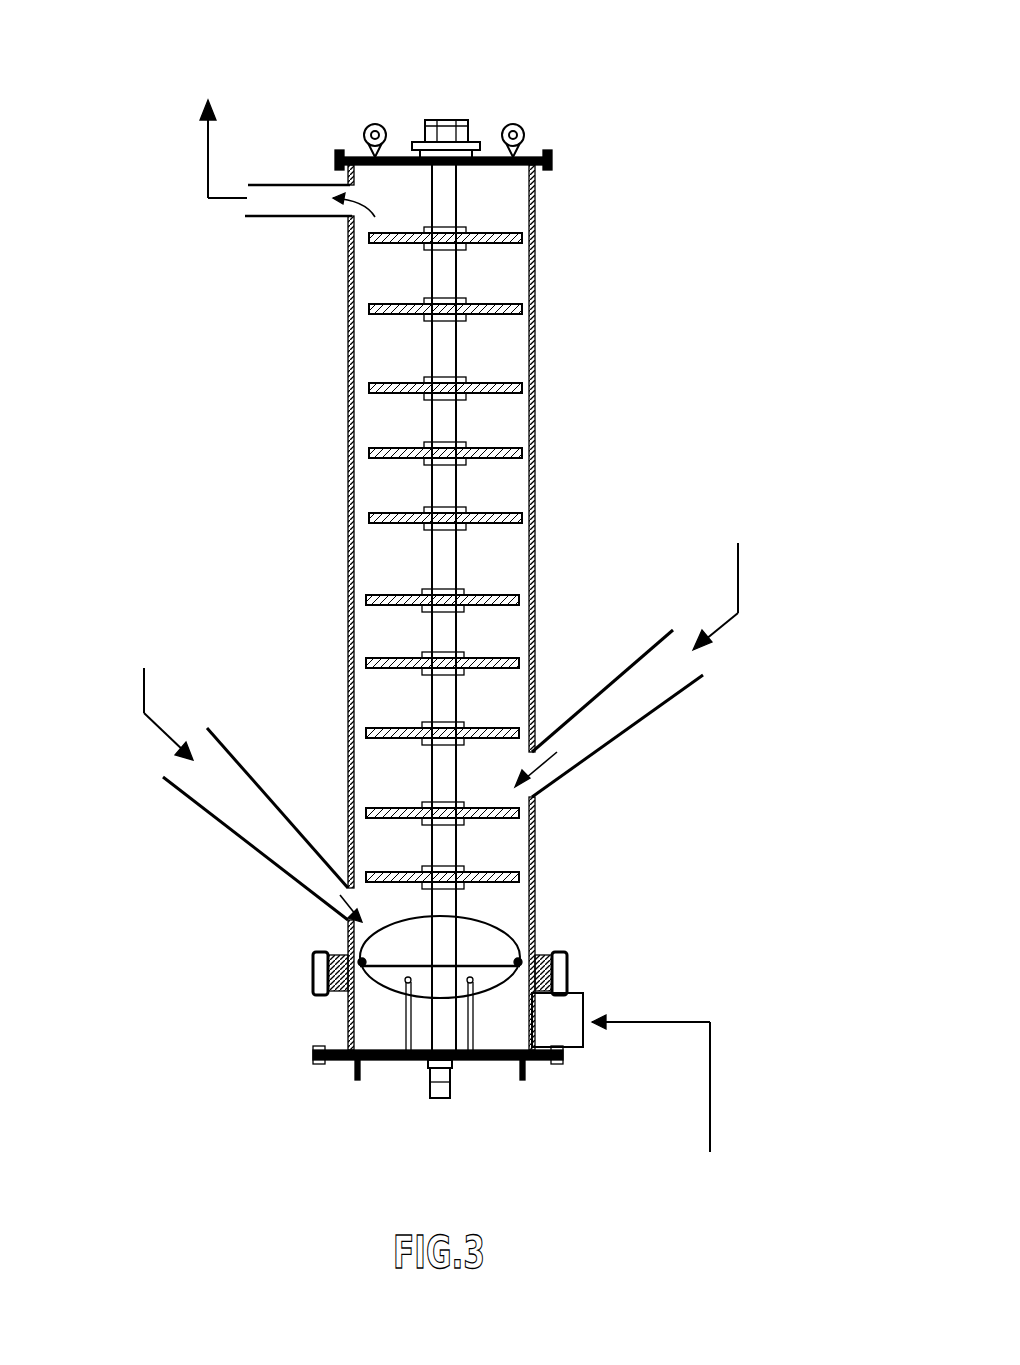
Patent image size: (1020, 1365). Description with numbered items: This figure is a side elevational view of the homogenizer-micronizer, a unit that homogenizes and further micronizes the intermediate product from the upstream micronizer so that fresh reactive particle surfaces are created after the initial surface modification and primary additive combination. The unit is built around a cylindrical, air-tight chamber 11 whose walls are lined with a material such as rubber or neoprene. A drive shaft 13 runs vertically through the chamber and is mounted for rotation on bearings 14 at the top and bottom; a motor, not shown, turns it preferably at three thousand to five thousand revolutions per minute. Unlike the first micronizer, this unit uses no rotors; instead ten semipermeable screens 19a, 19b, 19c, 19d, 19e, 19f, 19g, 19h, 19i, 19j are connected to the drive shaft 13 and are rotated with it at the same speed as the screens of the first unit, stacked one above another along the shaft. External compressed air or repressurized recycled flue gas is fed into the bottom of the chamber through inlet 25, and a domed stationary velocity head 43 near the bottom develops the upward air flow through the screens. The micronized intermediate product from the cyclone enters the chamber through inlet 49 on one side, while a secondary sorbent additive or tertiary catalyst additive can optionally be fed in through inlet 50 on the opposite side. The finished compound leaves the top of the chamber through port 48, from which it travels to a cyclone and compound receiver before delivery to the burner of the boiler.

The chamber 11 is at (537, 362).
The drive shaft 13 is at (456, 290).
The bearings 14 is at (443, 160).
The semipermeable screen 19a is at (500, 875).
The semipermeable screen 19b is at (400, 810).
The semipermeable screen 19c is at (400, 730).
The semipermeable screen 19d is at (500, 660).
The semipermeable screen 19e is at (500, 597).
The semipermeable screen 19f is at (400, 515).
The semipermeable screen 19g is at (400, 450).
The semipermeable screen 19h is at (400, 385).
The semipermeable screen 19i is at (397, 307).
The semipermeable screen 19j is at (510, 232).
The inlet 25 is at (573, 1050).
The domed stationary velocity head 43 is at (382, 983).
The port 48 is at (278, 189).
The inlet 49 is at (602, 735).
The inlet 50 is at (270, 853).